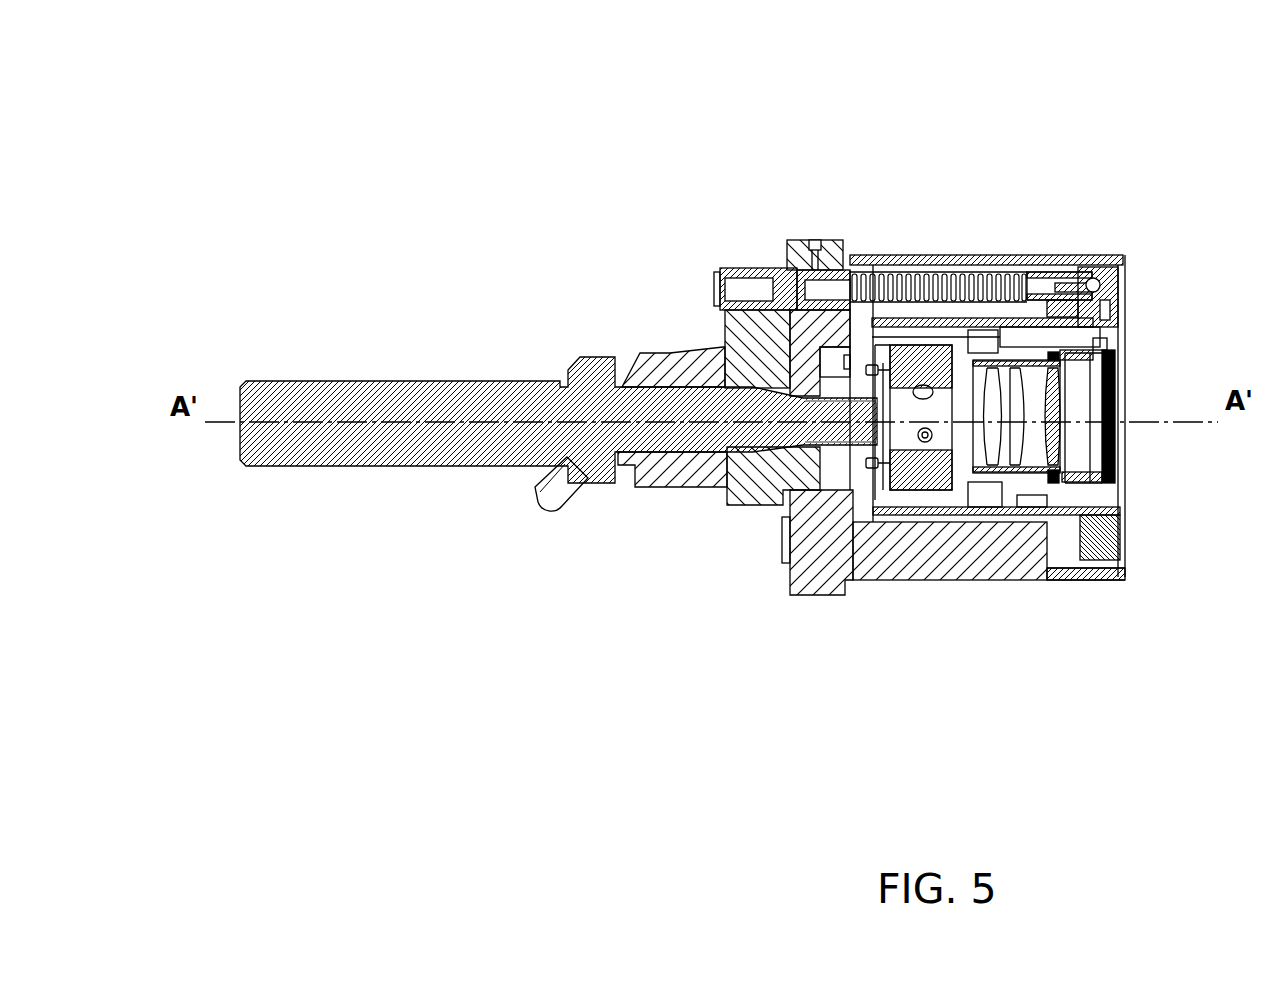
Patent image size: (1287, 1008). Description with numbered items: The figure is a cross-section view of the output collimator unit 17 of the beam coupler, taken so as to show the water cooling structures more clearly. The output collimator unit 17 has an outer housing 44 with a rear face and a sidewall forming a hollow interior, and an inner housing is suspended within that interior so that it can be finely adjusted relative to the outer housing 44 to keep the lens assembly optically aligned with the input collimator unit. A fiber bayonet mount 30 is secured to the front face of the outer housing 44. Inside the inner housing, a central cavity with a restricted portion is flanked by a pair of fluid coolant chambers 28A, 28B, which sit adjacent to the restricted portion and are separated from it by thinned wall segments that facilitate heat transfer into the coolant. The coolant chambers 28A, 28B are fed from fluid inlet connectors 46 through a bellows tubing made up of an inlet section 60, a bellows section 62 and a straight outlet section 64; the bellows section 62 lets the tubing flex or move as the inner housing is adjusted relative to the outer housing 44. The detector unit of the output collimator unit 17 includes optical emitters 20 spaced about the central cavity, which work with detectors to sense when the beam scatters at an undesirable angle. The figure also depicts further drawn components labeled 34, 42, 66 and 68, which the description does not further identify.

The output collimator unit 17 is at (970, 730).
The optical emitters 20 is at (925, 390).
The fluid coolant chamber 28A is at (985, 490).
The fluid coolant chamber 28B is at (1040, 500).
The fiber bayonet mount 30 is at (738, 358).
The housing base 34 is at (910, 510).
The end cap 42 is at (1117, 545).
The outer housing 44 is at (850, 565).
The fluid inlet connectors 46 is at (755, 285).
The inlet section 60 is at (813, 245).
The bellows section 62 is at (955, 258).
The straight outlet section 64 is at (1062, 268).
The guide rod 66 is at (1125, 318).
The end nut 68 is at (1123, 268).